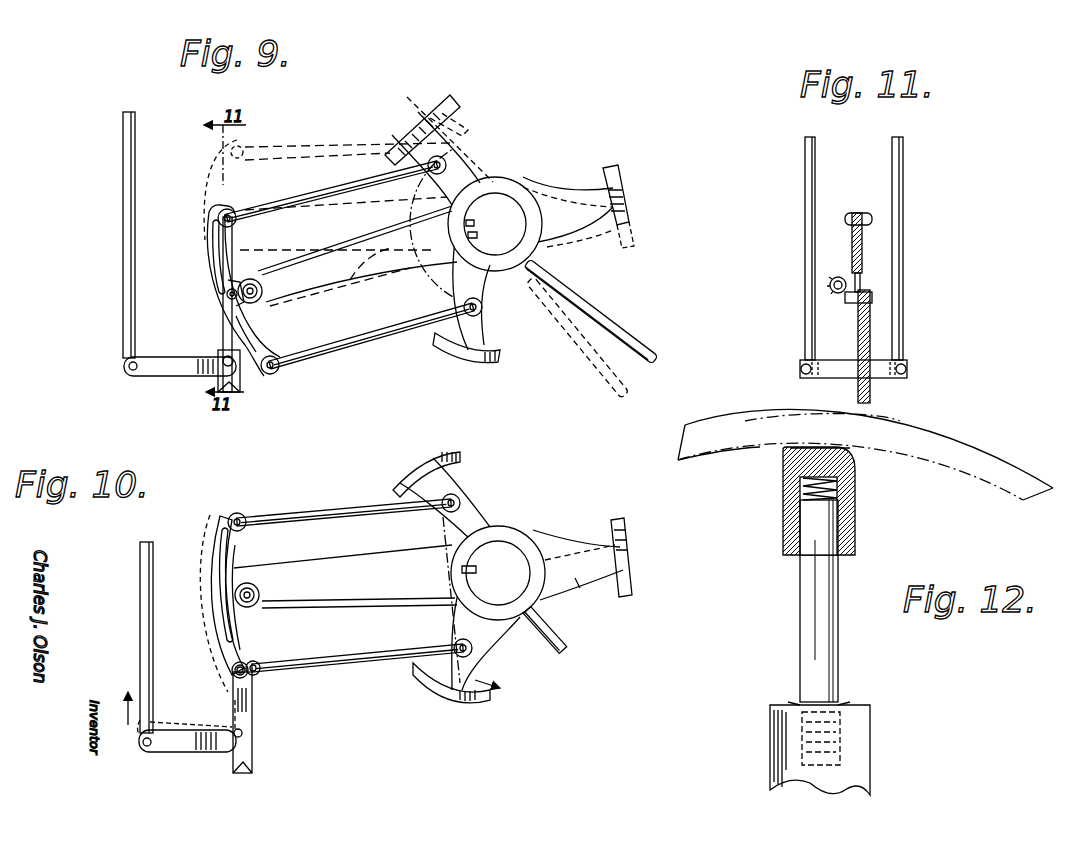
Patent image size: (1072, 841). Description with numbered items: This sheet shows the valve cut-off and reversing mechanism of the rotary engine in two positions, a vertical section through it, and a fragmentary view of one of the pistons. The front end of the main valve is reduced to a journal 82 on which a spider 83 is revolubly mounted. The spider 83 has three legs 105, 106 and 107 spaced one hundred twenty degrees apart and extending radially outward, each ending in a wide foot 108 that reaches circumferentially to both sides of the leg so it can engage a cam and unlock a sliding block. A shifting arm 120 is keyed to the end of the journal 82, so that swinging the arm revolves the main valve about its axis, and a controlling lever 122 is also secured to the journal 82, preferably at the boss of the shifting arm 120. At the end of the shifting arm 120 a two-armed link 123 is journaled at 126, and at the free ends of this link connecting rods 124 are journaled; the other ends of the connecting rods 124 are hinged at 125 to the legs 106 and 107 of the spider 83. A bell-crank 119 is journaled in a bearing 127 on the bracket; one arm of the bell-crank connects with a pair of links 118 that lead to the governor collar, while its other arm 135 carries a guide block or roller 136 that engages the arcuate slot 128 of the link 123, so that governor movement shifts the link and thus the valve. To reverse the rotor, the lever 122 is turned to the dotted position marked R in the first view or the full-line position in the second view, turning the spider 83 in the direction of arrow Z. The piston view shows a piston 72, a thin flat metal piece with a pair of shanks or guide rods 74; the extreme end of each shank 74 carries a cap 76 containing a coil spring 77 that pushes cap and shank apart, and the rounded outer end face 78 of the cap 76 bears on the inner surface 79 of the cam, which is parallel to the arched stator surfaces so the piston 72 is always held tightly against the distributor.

In FIG. 12, the piston 72 is at (862, 749).
In FIG. 12, the shank 74 is at (805, 630).
In FIG. 12, the cap 76 is at (850, 514).
In FIG. 12, the coil spring 77 is at (838, 486).
In FIG. 12, the outer end face 78 is at (800, 449).
In FIG. 12, the inner surface 79 is at (712, 462).
In FIG. 9, the journal 82 is at (476, 222).
In FIG. 10, the journal 82 is at (512, 556).
In FIG. 9, the spider 83 is at (553, 186).
In FIG. 10, the spider 83 is at (588, 548).
In FIG. 10, the leg 105 is at (572, 585).
In FIG. 9, the leg 106 is at (470, 175).
In FIG. 10, the leg 106 is at (412, 482).
In FIG. 9, the leg 107 is at (493, 292).
In FIG. 10, the leg 107 is at (476, 695).
In FIG. 9, the foot 108 is at (622, 172).
In FIG. 10, the foot 108 is at (620, 528).
In FIG. 9, the link 118 is at (135, 265).
In FIG. 10, the link 118 is at (143, 592).
In FIG. 11, the link 118 is at (893, 163).
In FIG. 9, the bell-crank 119 is at (162, 376).
In FIG. 10, the bell-crank 119 is at (162, 753).
In FIG. 11, the bell-crank 119 is at (840, 372).
In FIG. 9, the shifting arm 120 is at (352, 275).
In FIG. 10, the shifting arm 120 is at (330, 600).
In FIG. 9, the controlling lever 122 is at (598, 313).
In FIG. 10, the controlling lever 122 is at (562, 651).
In FIG. 9, the two-armed link 123 is at (254, 333).
In FIG. 10, the two-armed link 123 is at (232, 566).
In FIG. 11, the two-armed link 123 is at (852, 253).
In FIG. 9, the connecting rod 124 is at (328, 195).
In FIG. 10, the connecting rod 124 is at (335, 507).
In FIG. 11, the connecting rod 124 is at (855, 237).
In FIG. 10, the hinge 125 is at (460, 505).
In FIG. 9, the journal 126 is at (252, 279).
In FIG. 10, the journal 126 is at (259, 597).
In FIG. 11, the journal 126 is at (833, 292).
In FIG. 9, the bearing 127 is at (222, 356).
In FIG. 10, the bearing 127 is at (252, 750).
In FIG. 11, the bearing 127 is at (872, 393).
In FIG. 9, the arcuate slot 128 is at (211, 247).
In FIG. 10, the arcuate slot 128 is at (232, 514).
In FIG. 9, the arm 135 is at (224, 326).
In FIG. 10, the arm 135 is at (235, 706).
In FIG. 9, the guide block 136 is at (225, 294).
In FIG. 10, the guide block 136 is at (232, 654).